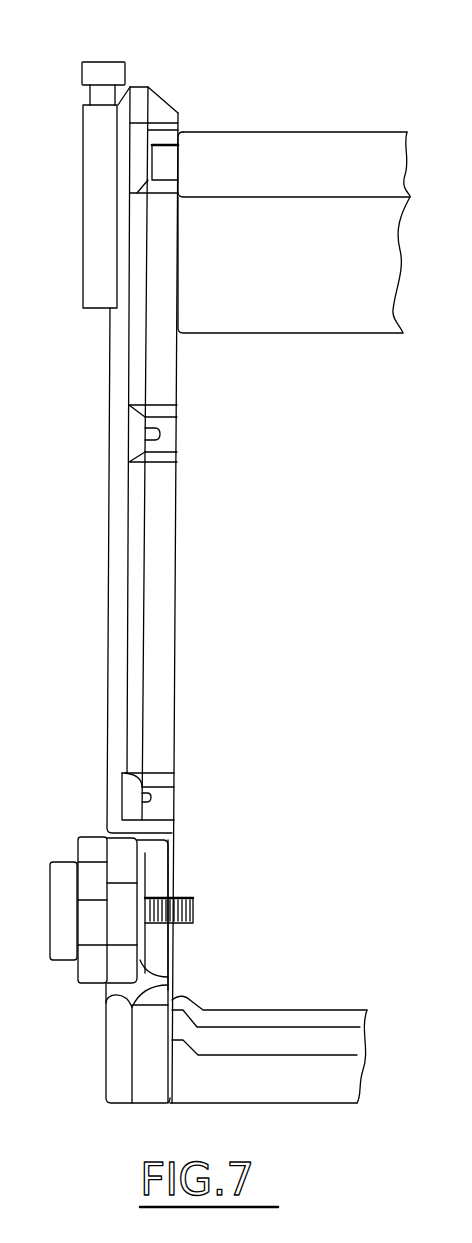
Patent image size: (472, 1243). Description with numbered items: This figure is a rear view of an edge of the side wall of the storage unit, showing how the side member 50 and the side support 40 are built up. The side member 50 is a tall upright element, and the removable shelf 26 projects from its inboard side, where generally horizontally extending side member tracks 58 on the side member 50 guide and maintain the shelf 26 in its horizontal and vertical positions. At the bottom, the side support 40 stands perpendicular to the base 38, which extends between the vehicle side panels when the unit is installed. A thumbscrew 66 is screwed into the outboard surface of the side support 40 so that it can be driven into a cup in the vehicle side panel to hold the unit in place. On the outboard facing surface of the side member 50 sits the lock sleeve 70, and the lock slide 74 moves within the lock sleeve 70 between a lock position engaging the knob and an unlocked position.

The removable shelf 26 is at (312, 127).
The base 38 is at (282, 1037).
The side support 40 is at (103, 1073).
The side member 50 is at (105, 607).
The horizontally extending side member track 58 is at (140, 440).
The thumbscrew 66 is at (77, 988).
The lock sleeve 70 is at (93, 217).
The lock slide 74 is at (118, 68).